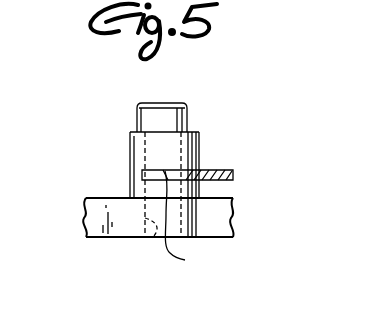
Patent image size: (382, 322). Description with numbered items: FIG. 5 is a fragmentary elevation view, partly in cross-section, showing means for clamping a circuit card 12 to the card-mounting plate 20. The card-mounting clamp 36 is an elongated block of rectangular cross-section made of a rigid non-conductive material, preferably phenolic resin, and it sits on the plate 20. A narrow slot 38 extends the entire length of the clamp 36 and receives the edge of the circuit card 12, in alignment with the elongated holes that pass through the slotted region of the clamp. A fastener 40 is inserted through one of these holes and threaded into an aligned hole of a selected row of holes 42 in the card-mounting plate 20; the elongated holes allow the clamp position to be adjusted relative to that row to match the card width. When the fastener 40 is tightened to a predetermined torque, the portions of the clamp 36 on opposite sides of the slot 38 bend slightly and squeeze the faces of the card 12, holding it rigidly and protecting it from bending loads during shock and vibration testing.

The circuit card 12 is at (228, 186).
The card-mounting plate 20 is at (222, 230).
The card-mounting clamp 36 is at (200, 150).
The narrow slot 38 is at (189, 223).
The fastener 40 is at (148, 113).
The holes 42 is at (153, 240).